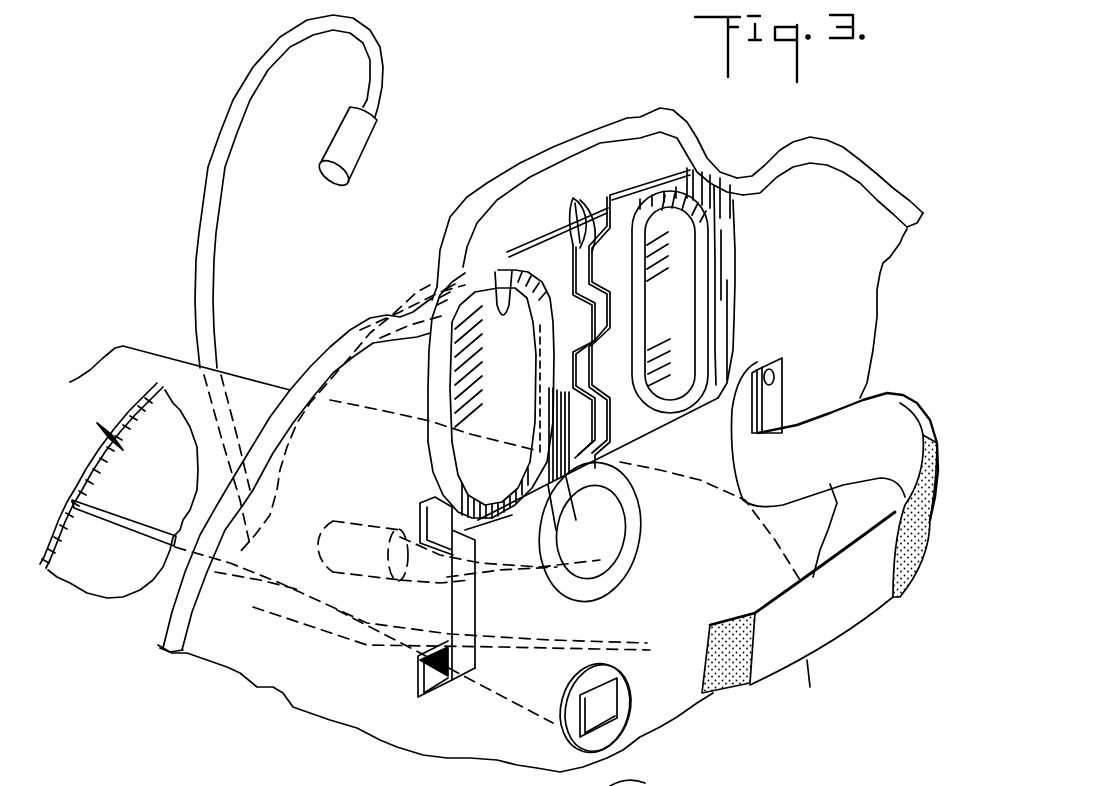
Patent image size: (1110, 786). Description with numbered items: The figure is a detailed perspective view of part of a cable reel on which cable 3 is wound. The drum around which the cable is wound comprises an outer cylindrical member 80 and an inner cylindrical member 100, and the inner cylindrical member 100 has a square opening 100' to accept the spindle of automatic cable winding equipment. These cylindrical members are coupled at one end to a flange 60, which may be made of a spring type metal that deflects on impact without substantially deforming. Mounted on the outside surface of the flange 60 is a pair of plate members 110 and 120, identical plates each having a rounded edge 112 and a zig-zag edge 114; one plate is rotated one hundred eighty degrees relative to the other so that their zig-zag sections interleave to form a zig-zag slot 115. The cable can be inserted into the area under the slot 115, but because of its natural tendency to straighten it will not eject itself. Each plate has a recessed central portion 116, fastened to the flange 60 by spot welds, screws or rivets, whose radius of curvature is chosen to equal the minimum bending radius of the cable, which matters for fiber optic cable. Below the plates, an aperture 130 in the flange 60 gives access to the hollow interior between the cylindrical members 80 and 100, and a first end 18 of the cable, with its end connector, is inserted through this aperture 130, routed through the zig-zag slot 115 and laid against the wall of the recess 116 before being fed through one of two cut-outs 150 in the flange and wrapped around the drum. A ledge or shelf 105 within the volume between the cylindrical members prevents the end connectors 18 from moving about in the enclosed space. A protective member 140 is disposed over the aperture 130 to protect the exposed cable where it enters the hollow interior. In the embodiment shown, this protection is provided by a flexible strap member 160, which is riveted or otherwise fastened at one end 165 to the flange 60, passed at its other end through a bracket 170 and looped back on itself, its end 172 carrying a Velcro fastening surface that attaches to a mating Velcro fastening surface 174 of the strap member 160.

The cable 3 is at (210, 168).
The cable end connector 18 is at (318, 547).
The flange 60 is at (310, 378).
The outer cylindrical member 80 is at (145, 362).
The inner cylindrical member 100 is at (551, 708).
The square opening 100' is at (631, 693).
The ledge or shelf 105 is at (593, 633).
The plate member 110 is at (543, 243).
The rounded edge 112 is at (430, 432).
The zig-zag edge 114 is at (572, 203).
The zig-zag slot 115 is at (600, 313).
The recessed central portion 116 is at (512, 424).
The plate member 120 is at (632, 197).
The aperture 130 is at (640, 530).
The protective member 140 is at (910, 380).
The cut-out 150 is at (747, 153).
The strap member 160 is at (828, 633).
The strap end 165 is at (775, 397).
The bracket 170 is at (417, 672).
The strap end 172 is at (727, 683).
The mating Velcro fastening surface 174 is at (907, 573).